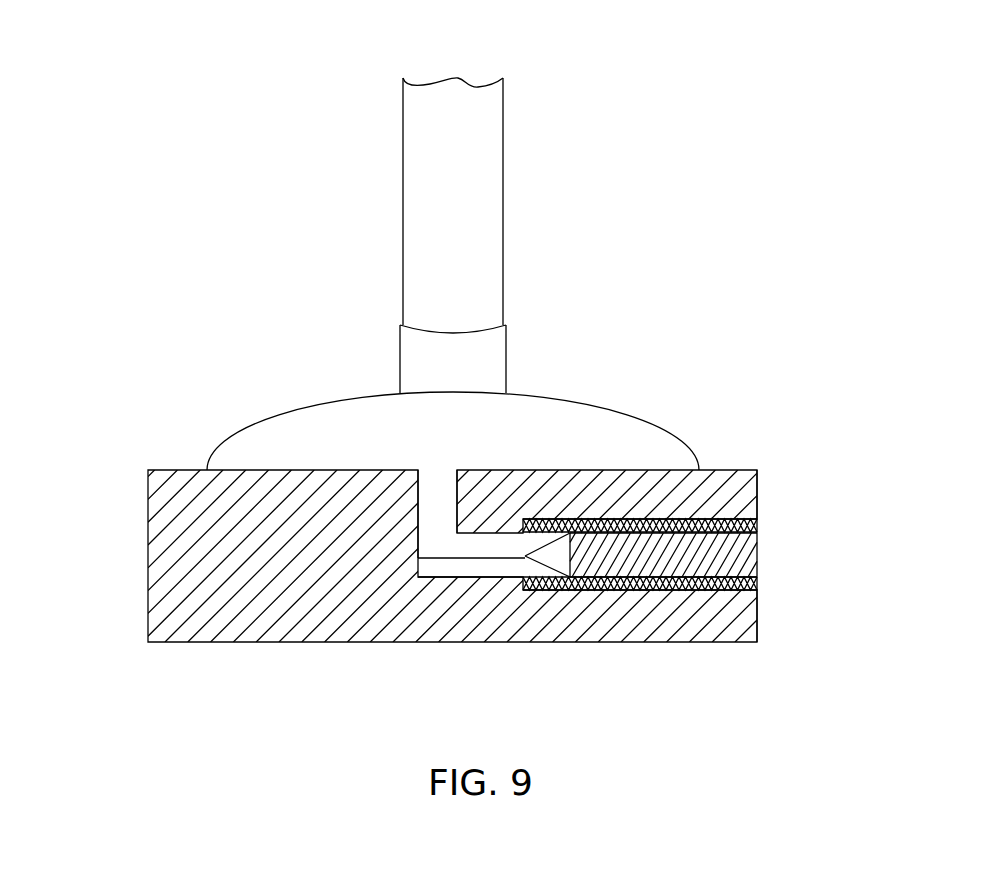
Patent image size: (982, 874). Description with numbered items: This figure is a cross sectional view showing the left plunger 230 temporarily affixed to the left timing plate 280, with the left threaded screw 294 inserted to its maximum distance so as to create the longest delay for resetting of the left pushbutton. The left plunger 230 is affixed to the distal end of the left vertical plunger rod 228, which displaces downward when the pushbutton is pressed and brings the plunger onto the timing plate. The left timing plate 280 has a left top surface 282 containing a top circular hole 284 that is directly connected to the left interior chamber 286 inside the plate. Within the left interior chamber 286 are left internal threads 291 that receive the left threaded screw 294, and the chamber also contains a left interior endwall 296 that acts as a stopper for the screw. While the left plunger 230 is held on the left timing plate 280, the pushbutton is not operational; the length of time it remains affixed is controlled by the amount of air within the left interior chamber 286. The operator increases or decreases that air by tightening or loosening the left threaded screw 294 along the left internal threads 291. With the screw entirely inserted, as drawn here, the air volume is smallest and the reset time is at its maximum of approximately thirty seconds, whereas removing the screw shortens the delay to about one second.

The left vertical plunger rod 228 is at (514, 196).
The left plunger 230 is at (277, 388).
The left timing plate 280 is at (137, 549).
The left top surface 282 is at (722, 469).
The top circular hole 284 is at (444, 466).
The left interior chamber 286 is at (445, 548).
The left internal threads 291 is at (663, 598).
The left threaded screw 294 is at (766, 558).
The left interior endwall 296 is at (528, 572).